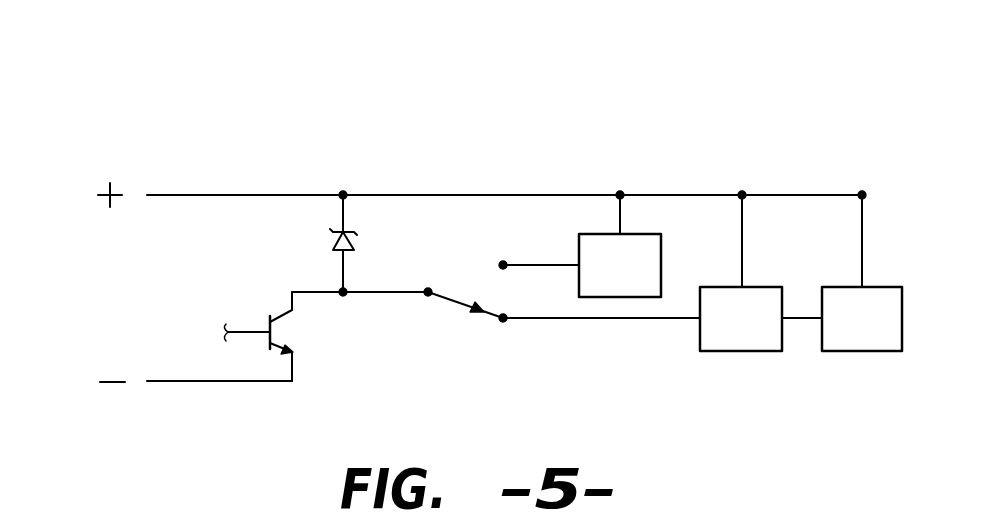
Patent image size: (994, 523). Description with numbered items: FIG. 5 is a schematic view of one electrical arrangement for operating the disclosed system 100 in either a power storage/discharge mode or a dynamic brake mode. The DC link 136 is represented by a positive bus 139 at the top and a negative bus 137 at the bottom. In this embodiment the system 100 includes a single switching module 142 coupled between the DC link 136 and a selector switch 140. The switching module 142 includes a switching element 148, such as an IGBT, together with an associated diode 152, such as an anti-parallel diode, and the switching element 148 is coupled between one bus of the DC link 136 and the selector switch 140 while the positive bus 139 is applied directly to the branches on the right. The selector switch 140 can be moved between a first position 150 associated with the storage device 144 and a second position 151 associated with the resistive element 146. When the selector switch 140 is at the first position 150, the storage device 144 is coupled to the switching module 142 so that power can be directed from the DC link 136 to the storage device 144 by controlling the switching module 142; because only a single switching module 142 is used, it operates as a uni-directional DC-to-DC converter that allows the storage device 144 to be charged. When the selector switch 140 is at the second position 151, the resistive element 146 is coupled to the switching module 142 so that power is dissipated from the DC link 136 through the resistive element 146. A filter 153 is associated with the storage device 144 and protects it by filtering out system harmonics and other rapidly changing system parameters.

The system 100 is at (470, 216).
The DC link 136 is at (104, 280).
The negative bus 137 is at (230, 383).
The positive bus 139 is at (237, 192).
The selector switch 140 is at (452, 302).
The switching module 142 is at (264, 293).
The storage device 144 is at (885, 332).
The resistive element 146 is at (643, 280).
The switching element 148 is at (264, 318).
The first position 150 is at (503, 322).
The second position 151 is at (503, 261).
The diode 152 is at (357, 238).
The filter 153 is at (764, 332).